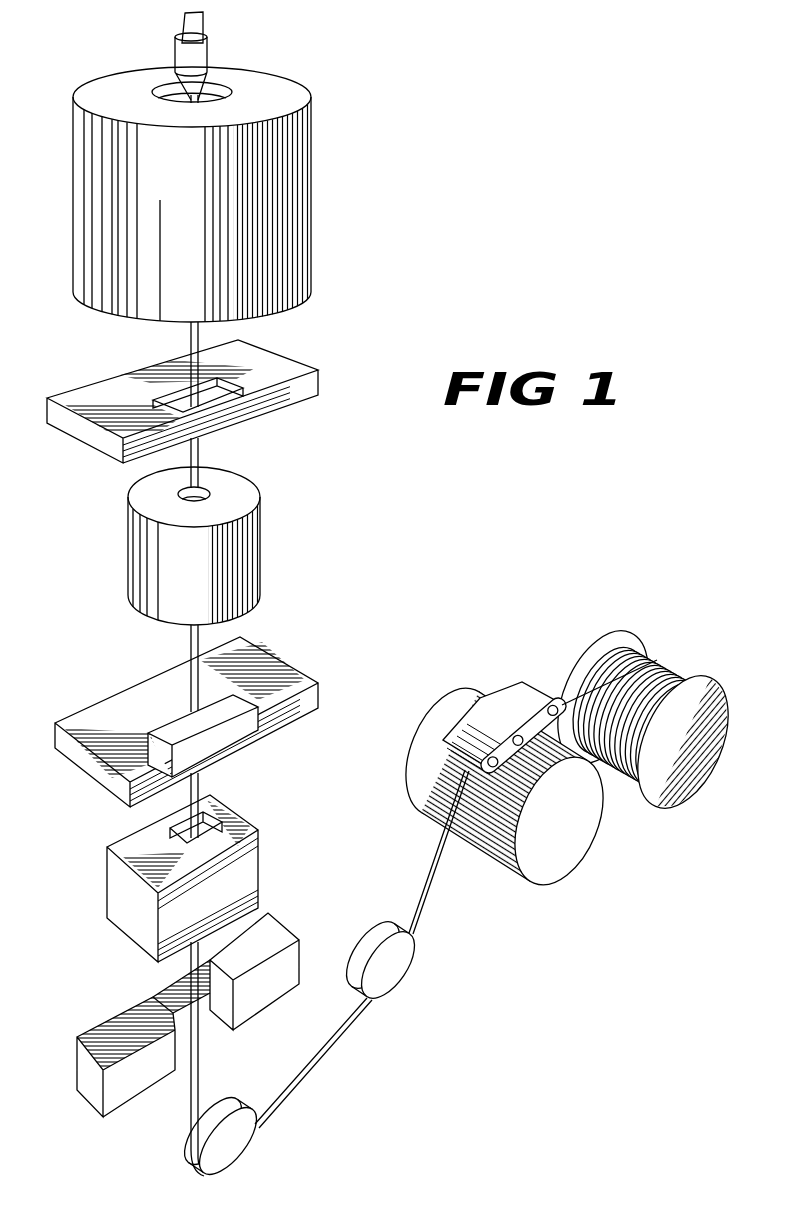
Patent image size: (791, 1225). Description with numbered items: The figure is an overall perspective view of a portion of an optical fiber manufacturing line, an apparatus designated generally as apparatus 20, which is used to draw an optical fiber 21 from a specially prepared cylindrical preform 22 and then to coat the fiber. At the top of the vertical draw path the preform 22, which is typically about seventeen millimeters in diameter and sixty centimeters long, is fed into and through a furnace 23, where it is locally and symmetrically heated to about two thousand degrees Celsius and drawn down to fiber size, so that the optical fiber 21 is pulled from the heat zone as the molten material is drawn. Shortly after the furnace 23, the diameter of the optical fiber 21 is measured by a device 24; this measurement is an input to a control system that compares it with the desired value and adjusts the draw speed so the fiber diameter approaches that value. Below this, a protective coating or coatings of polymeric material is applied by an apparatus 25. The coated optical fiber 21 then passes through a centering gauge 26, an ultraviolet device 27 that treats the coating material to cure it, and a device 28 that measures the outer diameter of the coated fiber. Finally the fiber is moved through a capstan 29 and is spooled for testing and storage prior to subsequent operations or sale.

The apparatus 20 is at (383, 520).
The optical fiber 21 is at (209, 449).
The preform 22 is at (203, 25).
The furnace 23 is at (308, 200).
The device 24 is at (295, 358).
The apparatus 25 is at (262, 542).
The centering gauge 26 is at (287, 663).
The ultraviolet (UV) device 27 is at (262, 870).
The device 28 is at (300, 942).
The capstan 29 is at (494, 692).